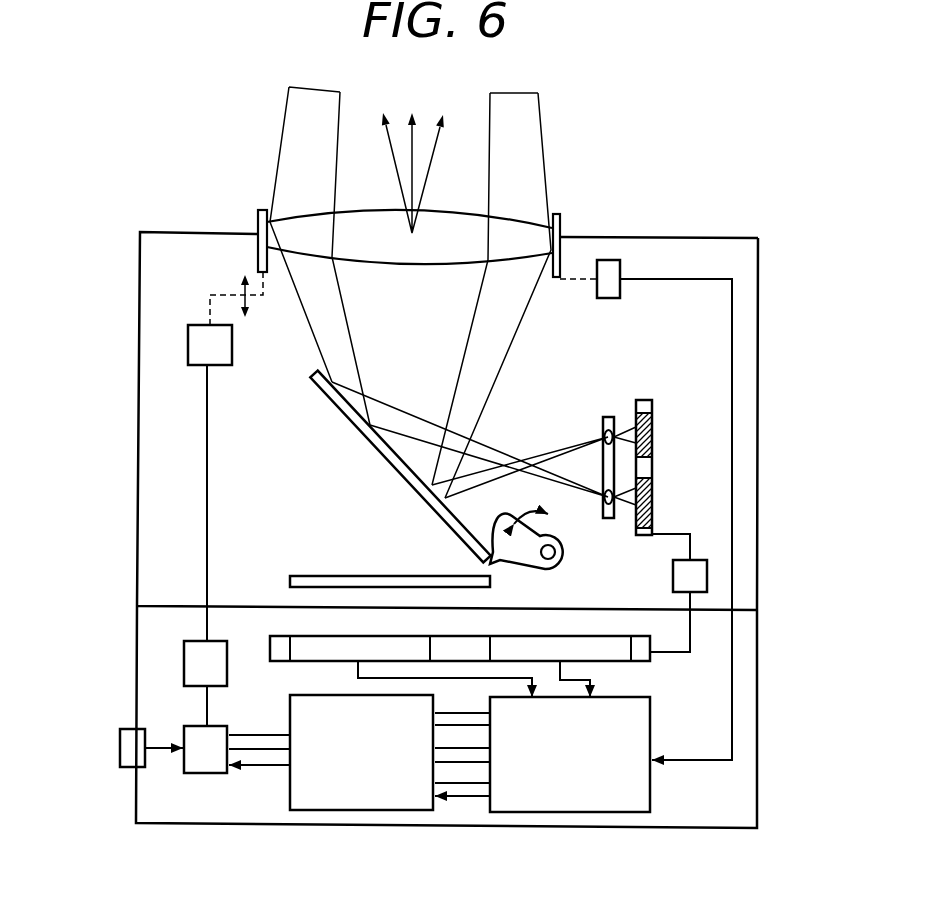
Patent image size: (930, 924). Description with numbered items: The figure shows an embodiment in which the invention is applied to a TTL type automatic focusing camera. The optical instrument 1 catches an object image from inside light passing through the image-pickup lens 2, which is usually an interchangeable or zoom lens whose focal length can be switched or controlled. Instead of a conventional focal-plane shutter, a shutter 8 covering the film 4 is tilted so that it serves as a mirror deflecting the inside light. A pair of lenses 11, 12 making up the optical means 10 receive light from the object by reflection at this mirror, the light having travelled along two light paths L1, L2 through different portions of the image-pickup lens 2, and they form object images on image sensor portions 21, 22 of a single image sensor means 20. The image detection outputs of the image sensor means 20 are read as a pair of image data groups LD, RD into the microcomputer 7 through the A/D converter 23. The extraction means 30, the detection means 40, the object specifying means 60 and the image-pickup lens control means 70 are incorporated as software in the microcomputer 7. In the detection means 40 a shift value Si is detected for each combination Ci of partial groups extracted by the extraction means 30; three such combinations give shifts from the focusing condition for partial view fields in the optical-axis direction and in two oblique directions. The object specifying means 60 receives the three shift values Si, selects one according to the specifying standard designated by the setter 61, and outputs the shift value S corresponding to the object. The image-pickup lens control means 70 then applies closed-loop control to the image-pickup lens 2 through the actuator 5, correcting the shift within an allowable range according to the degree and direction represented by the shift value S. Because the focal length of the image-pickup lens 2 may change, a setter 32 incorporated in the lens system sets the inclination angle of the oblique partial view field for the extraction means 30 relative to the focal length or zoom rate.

The optical instrument 1 is at (758, 268).
The image-pickup lens 2 is at (296, 212).
The film 4 is at (305, 576).
The actuator 5 is at (188, 335).
The microcomputer 7 is at (757, 806).
The shutter 8 is at (326, 400).
The optical means 10 is at (608, 417).
The lens 11 is at (608, 518).
The lens 12 is at (603, 433).
The image sensor means 20 is at (645, 400).
The image sensor portion 21 is at (652, 497).
The image sensor portion 22 is at (652, 433).
The A/D converter 23 is at (707, 576).
The extraction means 30 is at (652, 803).
The setter 32 is at (608, 260).
The detection means 40 is at (289, 805).
The object specifying means 60 is at (184, 762).
The setter 61 is at (120, 755).
The image-pickup lens control means 70 is at (184, 657).
The light path L1 is at (298, 112).
The light path L2 is at (534, 121).
The central ray Lc is at (412, 135).
The image data group LD is at (317, 650).
The image data group RD is at (617, 651).
The shift value S is at (203, 710).
The shift value Si is at (268, 748).
The combination Ci is at (465, 785).